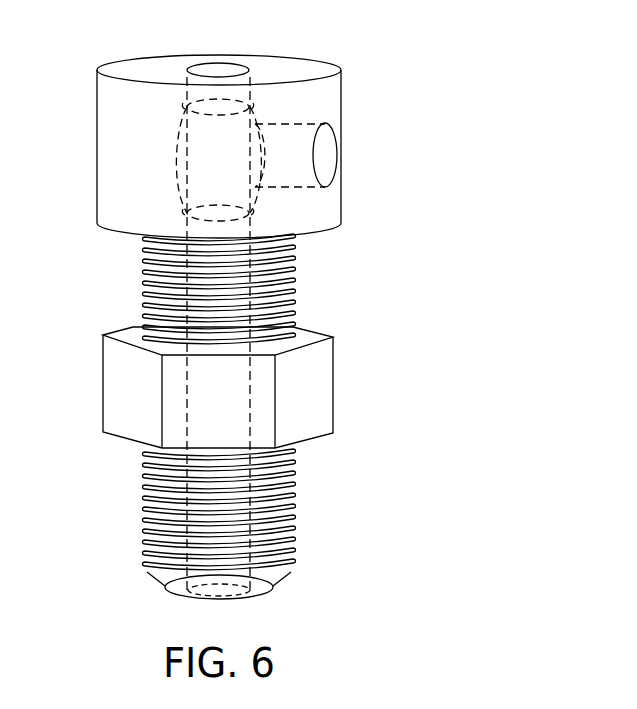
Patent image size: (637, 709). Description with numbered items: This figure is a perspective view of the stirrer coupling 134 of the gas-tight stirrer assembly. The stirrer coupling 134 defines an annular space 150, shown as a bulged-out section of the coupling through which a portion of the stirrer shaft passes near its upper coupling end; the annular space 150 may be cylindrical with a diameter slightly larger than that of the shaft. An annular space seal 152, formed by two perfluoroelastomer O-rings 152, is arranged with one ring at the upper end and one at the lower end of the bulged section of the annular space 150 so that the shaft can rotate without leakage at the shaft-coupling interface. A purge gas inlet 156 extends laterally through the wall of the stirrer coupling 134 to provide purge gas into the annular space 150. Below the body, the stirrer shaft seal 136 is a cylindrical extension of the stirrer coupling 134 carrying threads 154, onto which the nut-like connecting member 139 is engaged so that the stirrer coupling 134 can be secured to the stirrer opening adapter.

The stirrer coupling 134 is at (465, 58).
The stirrer shaft seal 136 is at (291, 279).
The connecting member 139 is at (333, 383).
The annular space 150 is at (230, 147).
The annular space seal 152 is at (198, 101).
The threads 154 is at (158, 515).
The purge gas inlet 156 is at (318, 152).